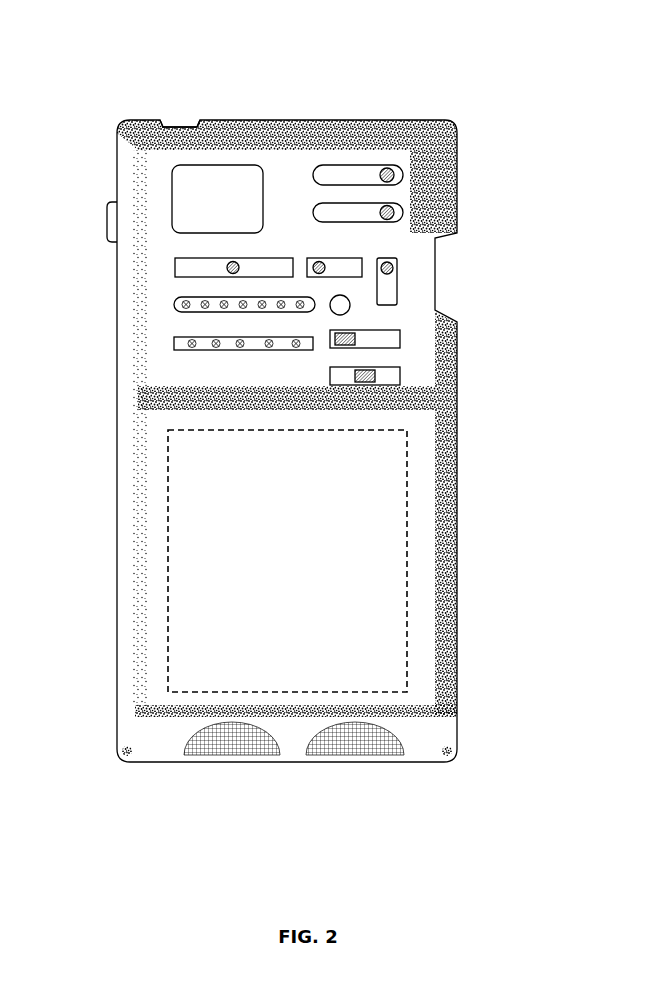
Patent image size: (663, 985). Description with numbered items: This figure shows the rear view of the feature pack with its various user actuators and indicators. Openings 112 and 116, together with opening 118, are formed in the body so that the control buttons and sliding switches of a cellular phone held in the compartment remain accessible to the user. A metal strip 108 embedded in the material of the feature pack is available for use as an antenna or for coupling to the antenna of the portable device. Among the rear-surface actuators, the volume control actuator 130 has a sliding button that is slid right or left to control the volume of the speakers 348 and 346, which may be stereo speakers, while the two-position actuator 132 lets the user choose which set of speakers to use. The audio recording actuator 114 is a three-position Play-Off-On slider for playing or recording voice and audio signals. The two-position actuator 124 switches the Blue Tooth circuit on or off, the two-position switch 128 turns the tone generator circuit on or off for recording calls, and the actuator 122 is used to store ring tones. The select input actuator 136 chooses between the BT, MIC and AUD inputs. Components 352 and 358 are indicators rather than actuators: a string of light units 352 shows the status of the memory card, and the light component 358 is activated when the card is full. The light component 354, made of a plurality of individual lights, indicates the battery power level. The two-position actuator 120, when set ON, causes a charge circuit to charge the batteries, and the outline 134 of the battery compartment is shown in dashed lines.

The metal strip 108 is at (318, 120).
The opening 112 is at (182, 188).
The audio recording actuator 114 is at (174, 272).
The opening 116 is at (436, 300).
The opening 118 is at (181, 127).
The two-position actuator 120 is at (400, 339).
The actuator 122 is at (107, 225).
The two-position actuator 124 is at (398, 266).
The two-position switch 128 is at (363, 262).
The volume control actuator 130 is at (405, 203).
The two-position actuator 132 is at (403, 168).
The outline of battery compartment 134 is at (408, 537).
The select input actuator 136 is at (400, 376).
The speaker 346 is at (355, 757).
The speaker 348 is at (232, 757).
The indicator 352 is at (172, 306).
The light component 354 is at (197, 351).
The light component 358 is at (330, 312).